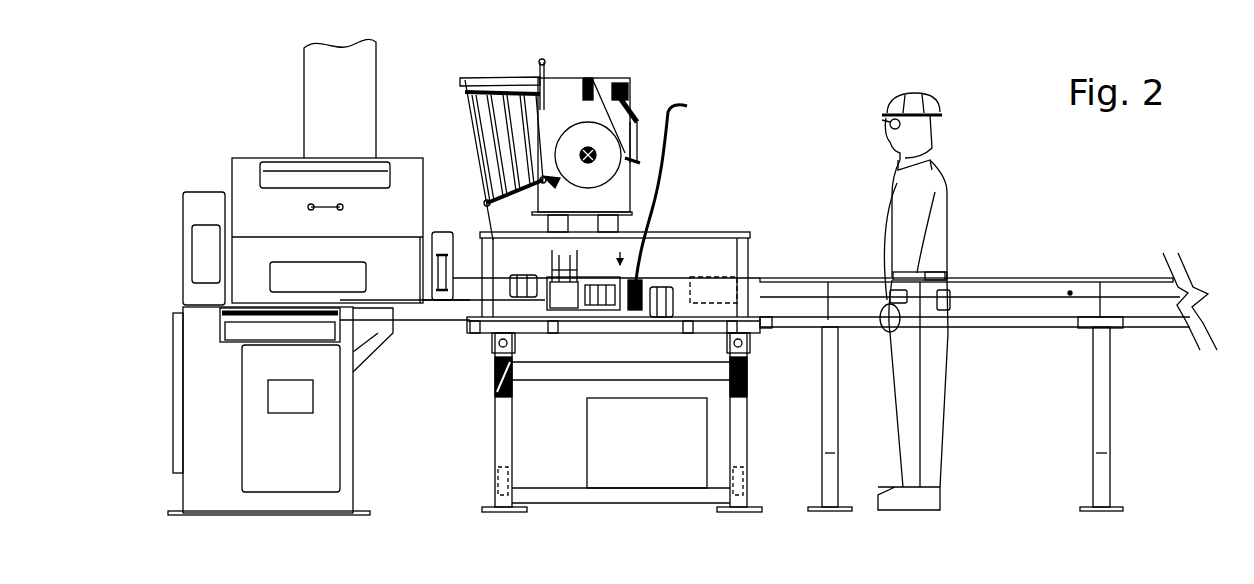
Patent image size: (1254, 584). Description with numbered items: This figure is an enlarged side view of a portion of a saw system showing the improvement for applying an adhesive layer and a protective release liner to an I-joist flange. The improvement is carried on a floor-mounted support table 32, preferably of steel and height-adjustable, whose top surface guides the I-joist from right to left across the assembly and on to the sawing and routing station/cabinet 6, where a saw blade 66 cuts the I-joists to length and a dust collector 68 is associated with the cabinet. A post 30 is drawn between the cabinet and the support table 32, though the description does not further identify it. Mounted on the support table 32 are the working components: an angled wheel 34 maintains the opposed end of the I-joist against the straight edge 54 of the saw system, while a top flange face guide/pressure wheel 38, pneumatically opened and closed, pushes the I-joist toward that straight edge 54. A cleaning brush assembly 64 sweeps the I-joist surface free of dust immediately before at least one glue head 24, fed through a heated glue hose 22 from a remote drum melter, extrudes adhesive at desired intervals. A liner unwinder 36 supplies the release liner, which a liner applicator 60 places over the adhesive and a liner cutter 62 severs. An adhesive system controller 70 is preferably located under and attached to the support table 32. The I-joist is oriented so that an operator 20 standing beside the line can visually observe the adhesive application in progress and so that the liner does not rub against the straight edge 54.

The sawing and routing station/cabinet 6 is at (243, 170).
The operator 20 is at (930, 443).
The glue hose 22 is at (687, 122).
The glue head 24 is at (649, 268).
The guide post 30 is at (445, 295).
The support table 32 is at (495, 385).
The angled wheel 34 is at (510, 270).
The liner unwinder 36 is at (593, 75).
The top flange face guide/pressure wheel 38 is at (667, 282).
The straight edge 54 is at (1035, 283).
The liner applicator 60 is at (603, 307).
The liner cutter 62 is at (575, 303).
The cleaning brush assembly 64 is at (722, 276).
The saw blade 66 is at (202, 207).
The dust collector 68 is at (315, 93).
The adhesive system controller 70 is at (688, 433).